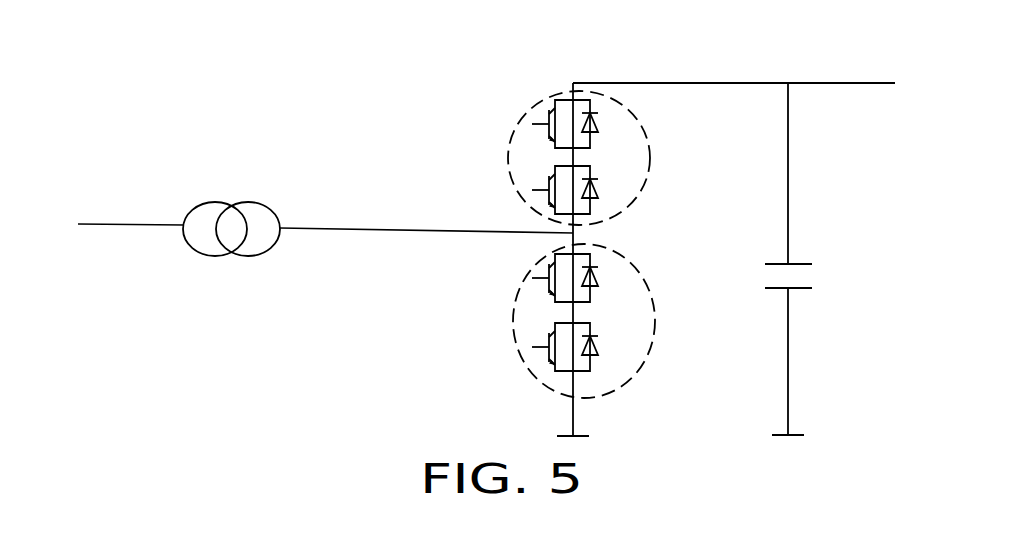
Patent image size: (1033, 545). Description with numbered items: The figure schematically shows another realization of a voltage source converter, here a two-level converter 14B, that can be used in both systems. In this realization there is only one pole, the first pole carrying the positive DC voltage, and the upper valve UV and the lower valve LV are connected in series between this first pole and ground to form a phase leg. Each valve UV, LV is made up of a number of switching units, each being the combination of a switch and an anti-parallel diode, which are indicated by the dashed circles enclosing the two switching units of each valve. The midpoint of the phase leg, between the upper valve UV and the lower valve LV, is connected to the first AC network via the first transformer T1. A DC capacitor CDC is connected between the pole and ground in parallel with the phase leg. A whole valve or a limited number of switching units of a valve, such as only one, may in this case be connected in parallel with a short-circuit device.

The two-level voltage source converter 14B is at (474, 177).
The upper valve UV is at (638, 132).
The lower valve LV is at (650, 288).
The first transformer T1 is at (325, 260).
The DC capacitor CDC is at (814, 259).